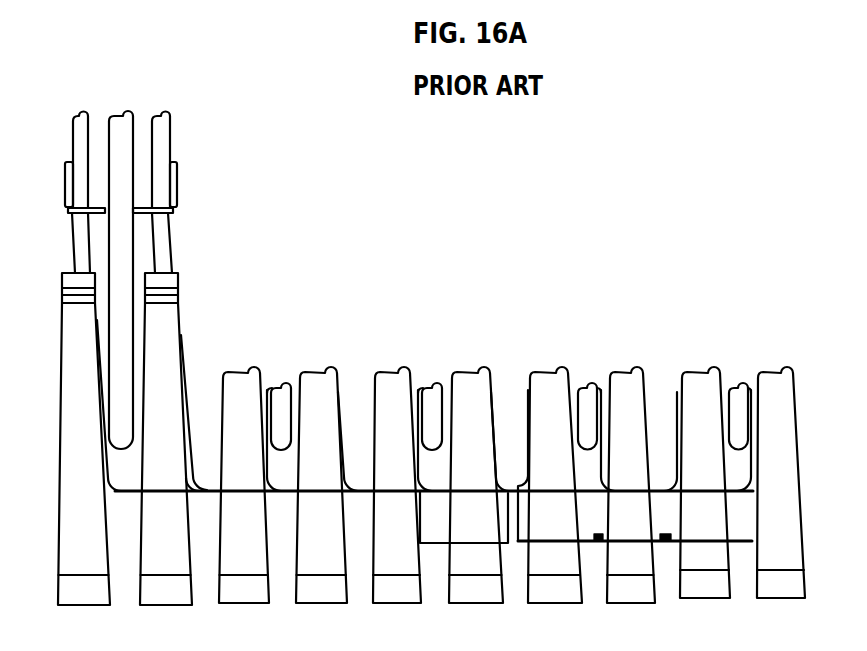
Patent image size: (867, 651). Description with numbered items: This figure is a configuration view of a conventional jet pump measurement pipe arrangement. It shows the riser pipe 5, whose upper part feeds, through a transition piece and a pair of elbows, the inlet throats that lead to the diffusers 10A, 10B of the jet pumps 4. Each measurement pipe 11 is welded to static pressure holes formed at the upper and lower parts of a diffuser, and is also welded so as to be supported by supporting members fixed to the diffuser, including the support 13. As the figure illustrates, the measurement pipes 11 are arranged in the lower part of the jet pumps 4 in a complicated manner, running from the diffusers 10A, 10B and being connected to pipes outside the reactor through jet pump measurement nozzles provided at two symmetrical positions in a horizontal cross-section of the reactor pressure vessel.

The jet pump 4 is at (166, 256).
The riser pipe 5 is at (115, 247).
The diffuser 10A is at (88, 542).
The diffuser 10B is at (163, 540).
The measurement pipe 11 is at (187, 400).
The support 13 is at (667, 541).